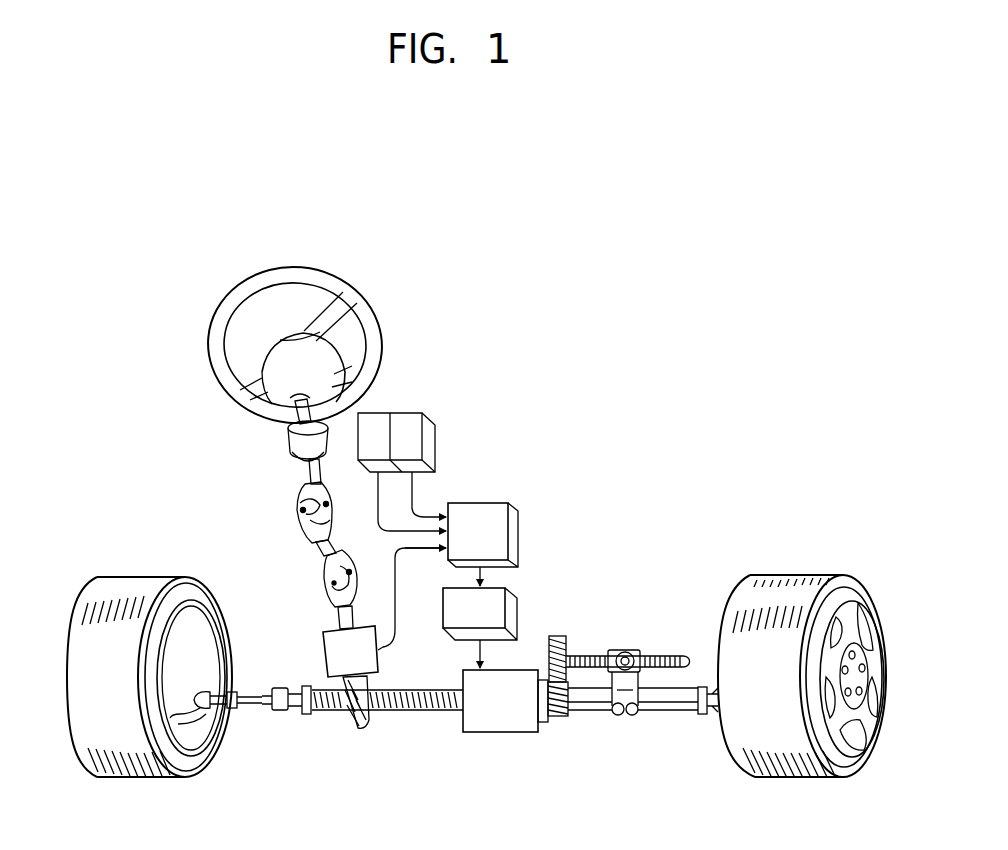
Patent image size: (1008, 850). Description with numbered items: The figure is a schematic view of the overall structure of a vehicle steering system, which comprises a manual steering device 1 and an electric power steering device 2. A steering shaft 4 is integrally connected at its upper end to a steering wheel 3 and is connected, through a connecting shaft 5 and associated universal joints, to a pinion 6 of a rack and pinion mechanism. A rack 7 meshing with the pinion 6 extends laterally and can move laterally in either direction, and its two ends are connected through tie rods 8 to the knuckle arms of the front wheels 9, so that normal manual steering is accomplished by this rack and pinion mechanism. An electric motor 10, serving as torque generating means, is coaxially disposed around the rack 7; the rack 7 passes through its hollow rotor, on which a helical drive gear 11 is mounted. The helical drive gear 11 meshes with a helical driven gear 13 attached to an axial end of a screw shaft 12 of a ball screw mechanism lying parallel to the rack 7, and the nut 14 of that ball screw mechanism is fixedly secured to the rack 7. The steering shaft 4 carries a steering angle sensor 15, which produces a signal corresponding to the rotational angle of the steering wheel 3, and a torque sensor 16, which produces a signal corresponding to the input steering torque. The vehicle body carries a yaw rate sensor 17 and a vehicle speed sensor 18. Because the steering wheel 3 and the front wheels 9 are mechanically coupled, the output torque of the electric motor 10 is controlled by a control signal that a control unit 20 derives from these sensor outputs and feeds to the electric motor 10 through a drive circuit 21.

The manual steering device 1 is at (320, 673).
The electric power steering device 2 is at (633, 637).
The steering wheel 3 is at (382, 320).
The steering shaft 4 is at (300, 478).
The connecting shaft 5 is at (325, 551).
The pinion 6 is at (350, 716).
The rack 7 is at (413, 712).
The tie rods 8 is at (238, 707).
The front wheels 9 is at (143, 577).
The electric motor 10 is at (497, 733).
The helical drive gear 11 is at (560, 720).
The screw shaft 12 is at (700, 640).
The helical driven gear 13 is at (560, 634).
The nut 14 is at (615, 648).
The steering angle sensor 15 is at (286, 446).
The torque sensor 16 is at (377, 648).
The yaw rate sensor 17 is at (380, 412).
The vehicle speed sensor 18 is at (420, 412).
The control unit 20 is at (520, 527).
The drive circuit 21 is at (517, 600).